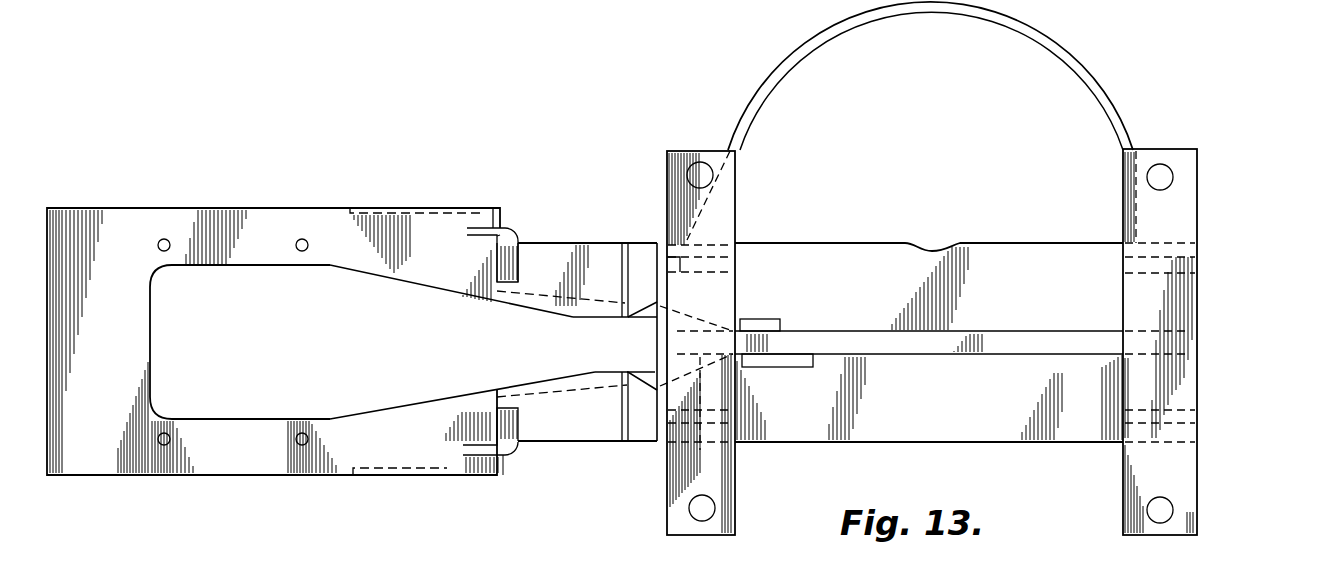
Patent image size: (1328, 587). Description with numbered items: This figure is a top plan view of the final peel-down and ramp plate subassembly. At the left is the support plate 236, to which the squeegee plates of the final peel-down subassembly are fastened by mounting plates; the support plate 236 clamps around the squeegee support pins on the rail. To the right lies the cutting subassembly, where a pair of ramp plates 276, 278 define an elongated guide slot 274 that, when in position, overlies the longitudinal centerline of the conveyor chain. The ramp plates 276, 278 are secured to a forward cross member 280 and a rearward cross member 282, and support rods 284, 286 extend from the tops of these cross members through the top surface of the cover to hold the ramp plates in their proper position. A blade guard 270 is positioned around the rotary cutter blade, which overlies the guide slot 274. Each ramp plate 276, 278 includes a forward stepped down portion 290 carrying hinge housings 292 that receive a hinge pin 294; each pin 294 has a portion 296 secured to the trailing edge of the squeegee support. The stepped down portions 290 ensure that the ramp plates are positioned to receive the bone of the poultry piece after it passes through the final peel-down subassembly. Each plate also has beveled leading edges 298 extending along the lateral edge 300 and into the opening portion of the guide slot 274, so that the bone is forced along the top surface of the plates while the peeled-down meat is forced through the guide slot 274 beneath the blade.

The support plate 236 is at (248, 208).
The blade guard 270 is at (1115, 107).
The guide slot 274 is at (1058, 340).
The ramp plate 276 is at (970, 431).
The ramp plate 278 is at (843, 252).
The forward cross member 280 is at (667, 207).
The rearward cross member 282 is at (1177, 217).
The support rod 284 is at (701, 176).
The support rod 286 is at (1170, 175).
The stepped down portion 290 is at (576, 243).
The hinge housing 292 is at (518, 243).
The hinge pin 294 is at (495, 241).
The portion of hinge pin 296 is at (467, 233).
The beveled leading edge 298 is at (597, 372).
The lateral edge 300 is at (802, 354).